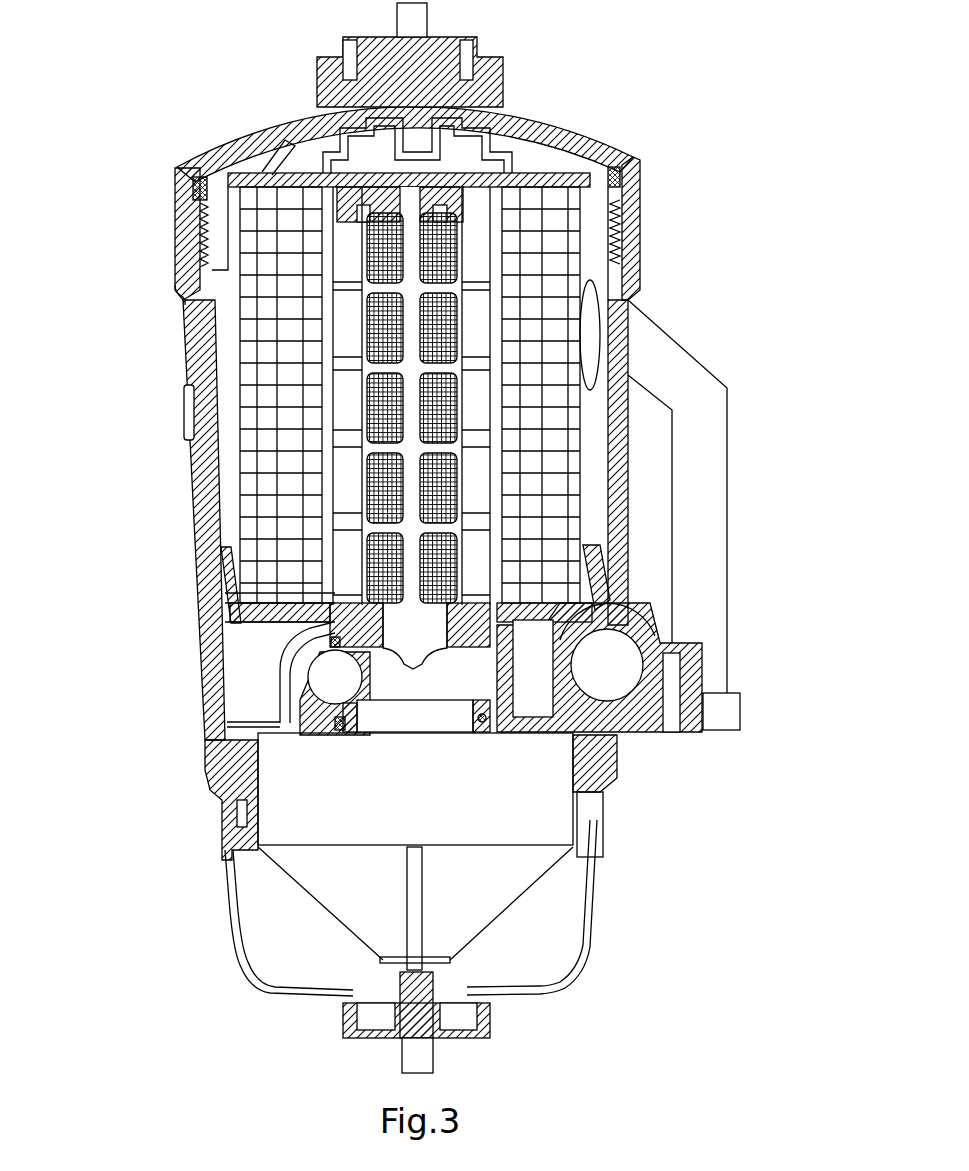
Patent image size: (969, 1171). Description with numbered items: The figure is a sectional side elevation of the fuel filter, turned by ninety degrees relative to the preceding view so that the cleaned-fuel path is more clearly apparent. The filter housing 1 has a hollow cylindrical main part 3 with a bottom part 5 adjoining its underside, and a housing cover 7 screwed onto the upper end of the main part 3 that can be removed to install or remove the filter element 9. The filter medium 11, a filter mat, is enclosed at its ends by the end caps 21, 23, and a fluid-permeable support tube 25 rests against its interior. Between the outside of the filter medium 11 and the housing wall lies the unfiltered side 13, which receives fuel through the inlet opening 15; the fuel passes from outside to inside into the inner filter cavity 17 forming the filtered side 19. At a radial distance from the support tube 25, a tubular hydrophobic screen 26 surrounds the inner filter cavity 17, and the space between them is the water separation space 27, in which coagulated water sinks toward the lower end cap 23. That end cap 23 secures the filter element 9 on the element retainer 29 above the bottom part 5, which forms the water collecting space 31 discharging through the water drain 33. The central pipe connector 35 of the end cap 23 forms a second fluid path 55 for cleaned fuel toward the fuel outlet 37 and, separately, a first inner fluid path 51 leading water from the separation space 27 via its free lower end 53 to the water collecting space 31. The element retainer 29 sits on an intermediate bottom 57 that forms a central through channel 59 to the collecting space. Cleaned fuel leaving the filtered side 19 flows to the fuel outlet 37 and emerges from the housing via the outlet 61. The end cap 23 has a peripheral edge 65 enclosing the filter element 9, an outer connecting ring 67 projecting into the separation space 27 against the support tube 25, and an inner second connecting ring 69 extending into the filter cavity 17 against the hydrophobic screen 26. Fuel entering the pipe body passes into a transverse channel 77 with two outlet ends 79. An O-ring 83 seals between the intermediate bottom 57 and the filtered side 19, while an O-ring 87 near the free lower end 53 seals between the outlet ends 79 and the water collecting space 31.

The filter housing 1 is at (668, 205).
The main part 3 is at (623, 358).
The bottom part 5 is at (606, 826).
The housing cover 7 is at (573, 140).
The filter element 9 is at (593, 173).
The filter medium 11 is at (275, 240).
The unfiltered side 13 is at (223, 455).
The inlet opening 15 is at (605, 300).
The inner filter cavity 17 is at (272, 280).
The filtered side 19 is at (227, 593).
The end cap 21 is at (325, 178).
The end cap 23 is at (325, 597).
The support tube 25 is at (325, 303).
The hydrophobic screen 26 is at (365, 400).
The water separation space 27 is at (480, 483).
The element retainer 29 is at (340, 647).
The water collecting space 31 is at (527, 873).
The water drain 33 is at (433, 990).
The pipe connector 35 is at (300, 705).
The fuel outlet 37 is at (310, 680).
The first inner fluid path 51 is at (343, 598).
The free lower end 53 is at (350, 732).
The second fluid path 55 is at (335, 632).
The intermediate bottom 57 is at (522, 735).
The central through channel 59 is at (600, 667).
The outlet 61 is at (680, 640).
The peripheral edge 65 is at (223, 550).
The connecting ring 67 is at (465, 607).
The second connecting ring 69 is at (472, 585).
The transverse channel 77 is at (450, 683).
The outlet ends 79 is at (503, 684).
The O-ring 83 is at (645, 628).
The O-ring 87 is at (610, 735).